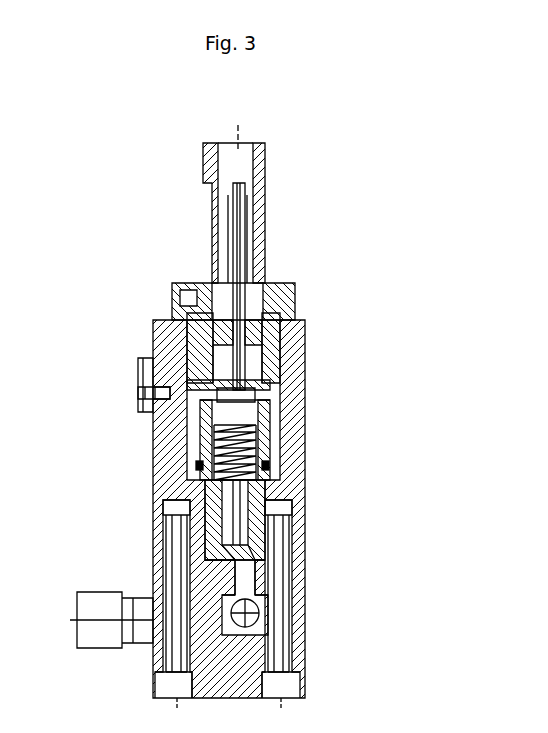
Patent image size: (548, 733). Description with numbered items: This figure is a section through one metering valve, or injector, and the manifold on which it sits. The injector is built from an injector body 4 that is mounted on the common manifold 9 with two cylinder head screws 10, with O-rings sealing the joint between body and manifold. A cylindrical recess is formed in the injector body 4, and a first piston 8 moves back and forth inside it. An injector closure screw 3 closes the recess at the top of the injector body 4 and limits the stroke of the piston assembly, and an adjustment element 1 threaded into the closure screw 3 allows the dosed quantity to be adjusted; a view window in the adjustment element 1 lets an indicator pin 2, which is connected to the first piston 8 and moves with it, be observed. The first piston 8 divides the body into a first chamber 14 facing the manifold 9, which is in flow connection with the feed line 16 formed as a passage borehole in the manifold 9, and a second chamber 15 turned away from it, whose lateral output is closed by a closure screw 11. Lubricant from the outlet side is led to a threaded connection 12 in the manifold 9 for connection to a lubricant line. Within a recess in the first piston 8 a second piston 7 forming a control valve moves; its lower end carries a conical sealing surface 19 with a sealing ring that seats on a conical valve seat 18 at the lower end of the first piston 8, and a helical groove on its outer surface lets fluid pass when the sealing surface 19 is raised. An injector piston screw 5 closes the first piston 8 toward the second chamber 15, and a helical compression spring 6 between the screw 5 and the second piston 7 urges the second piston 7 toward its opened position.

The adjustment element 1 is at (264, 178).
The indicator pin 2 is at (264, 220).
The injector closure screw 3 is at (294, 284).
The injector body 4 is at (306, 335).
The injector piston screw 5 is at (282, 378).
The helical compression spring 6 is at (272, 430).
The second piston 7 is at (270, 455).
The first piston 8 is at (268, 495).
The manifold 9 is at (300, 585).
The cylinder head screws 10 is at (295, 670).
The closure screw 11 is at (138, 358).
The threaded connection 12 is at (97, 615).
The first chamber 14 is at (235, 558).
The second chamber 15 is at (138, 393).
The feed line 16 is at (273, 607).
The conical valve seat 18 is at (180, 540).
The conical sealing surface 19 is at (290, 520).